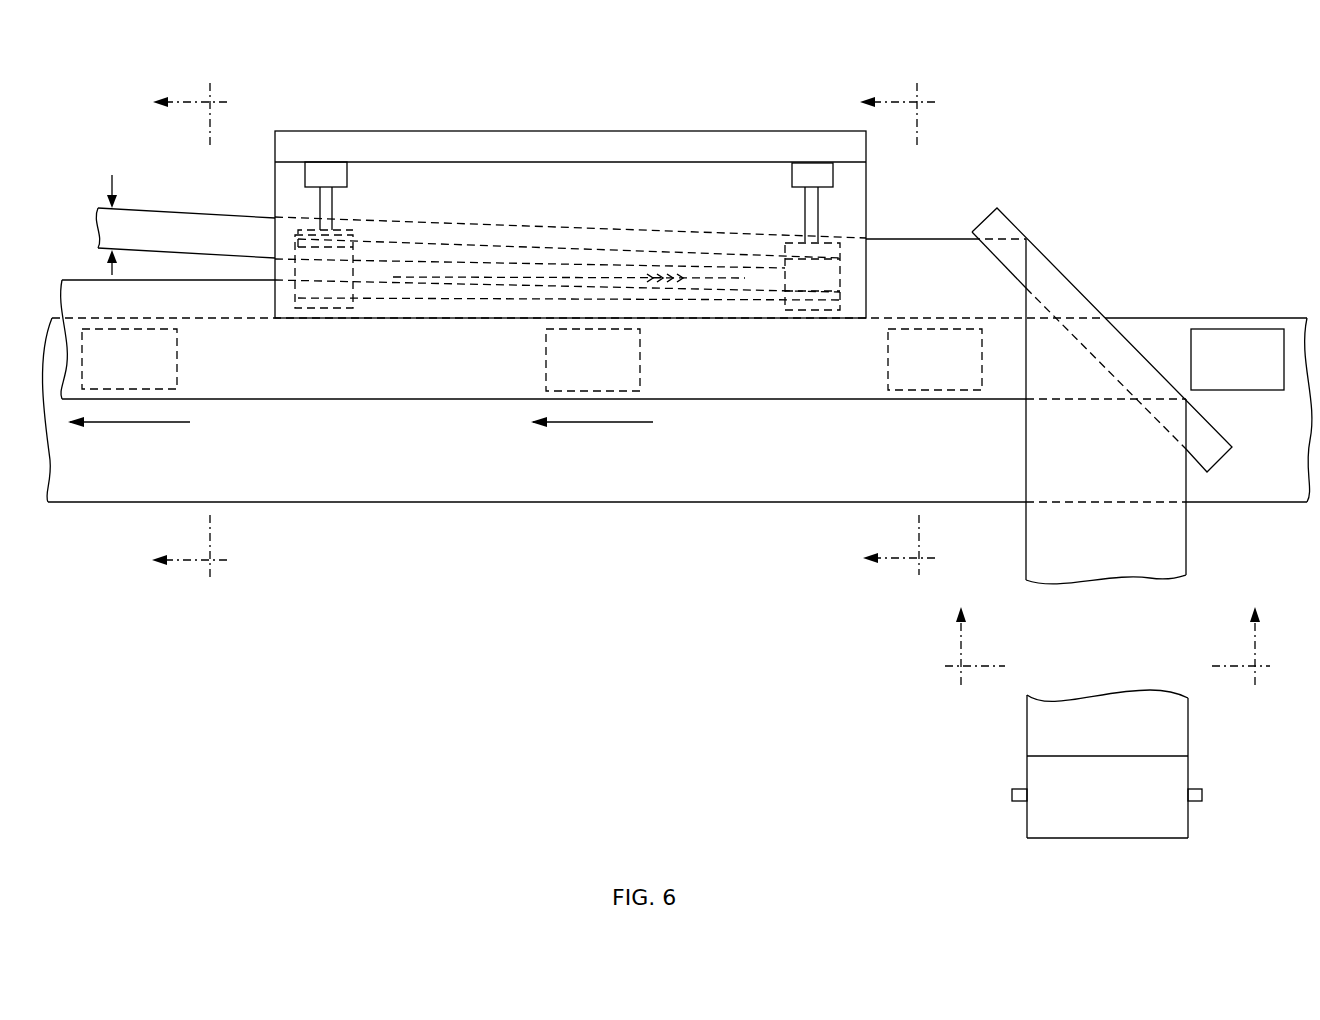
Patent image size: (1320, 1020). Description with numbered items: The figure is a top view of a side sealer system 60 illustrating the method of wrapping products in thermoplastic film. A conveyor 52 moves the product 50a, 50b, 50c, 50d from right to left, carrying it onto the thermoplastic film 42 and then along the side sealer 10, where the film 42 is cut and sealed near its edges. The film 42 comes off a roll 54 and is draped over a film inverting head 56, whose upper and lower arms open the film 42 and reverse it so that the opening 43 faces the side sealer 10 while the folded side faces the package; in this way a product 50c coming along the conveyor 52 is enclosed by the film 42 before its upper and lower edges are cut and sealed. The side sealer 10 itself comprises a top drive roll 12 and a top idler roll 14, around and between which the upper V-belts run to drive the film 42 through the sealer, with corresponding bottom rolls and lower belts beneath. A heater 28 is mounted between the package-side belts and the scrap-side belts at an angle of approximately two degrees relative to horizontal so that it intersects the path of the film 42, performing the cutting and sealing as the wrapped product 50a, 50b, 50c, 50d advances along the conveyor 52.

The side sealer system 60 is at (547, 98).
The side sealer 10 is at (698, 130).
The top drive roll 12 is at (352, 225).
The top idler roll 14 is at (792, 243).
The heater 28 is at (427, 275).
The opening 43 is at (112, 180).
The thermoplastic film 42 is at (915, 239).
The conveyor 52 is at (938, 502).
The roll 54 is at (1188, 817).
The film inverting head 56 is at (1077, 287).
The product 50a is at (129, 359).
The product 50b is at (593, 360).
The product 50c is at (935, 359).
The product 50d is at (1237, 359).